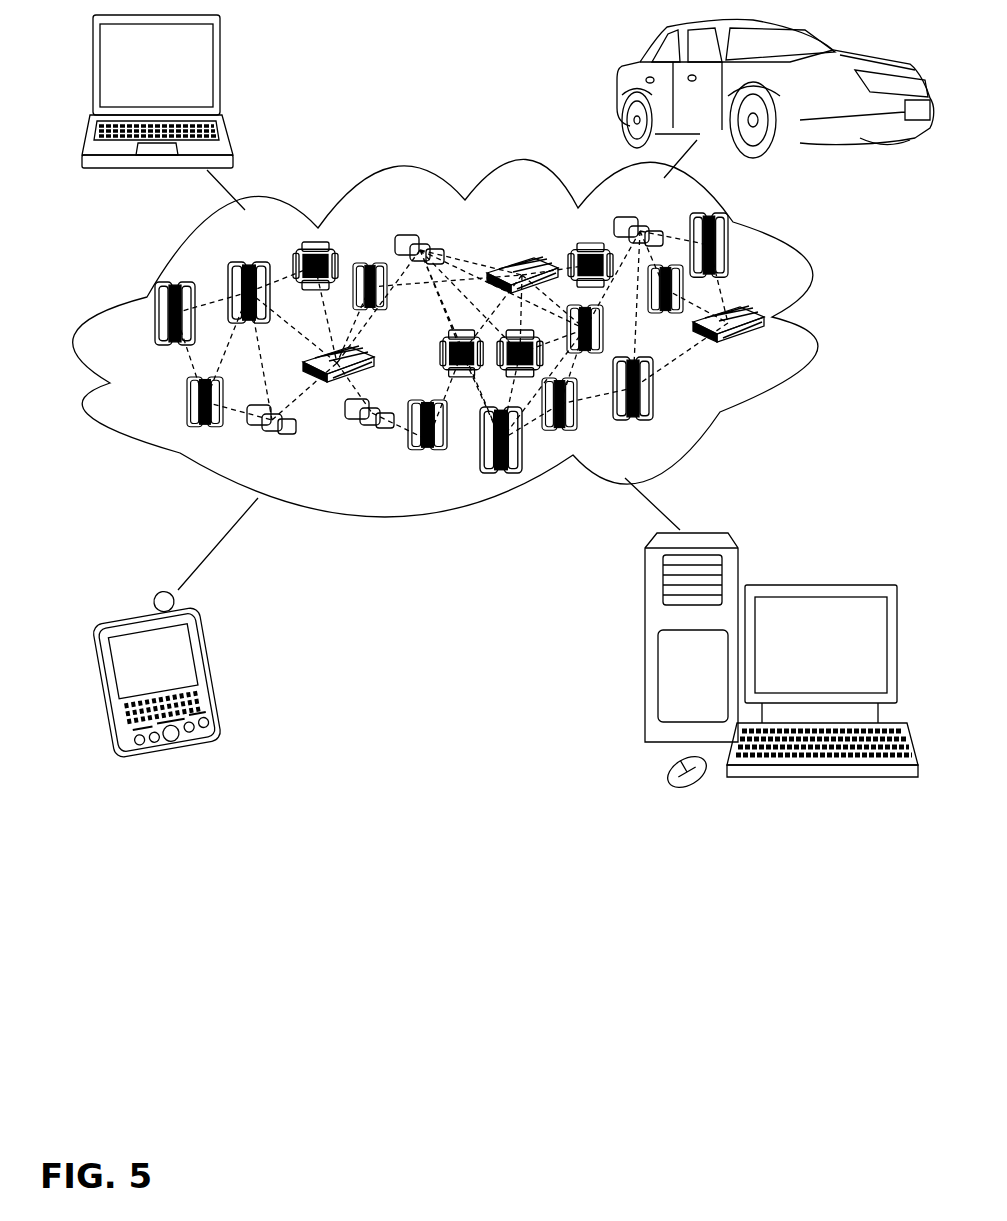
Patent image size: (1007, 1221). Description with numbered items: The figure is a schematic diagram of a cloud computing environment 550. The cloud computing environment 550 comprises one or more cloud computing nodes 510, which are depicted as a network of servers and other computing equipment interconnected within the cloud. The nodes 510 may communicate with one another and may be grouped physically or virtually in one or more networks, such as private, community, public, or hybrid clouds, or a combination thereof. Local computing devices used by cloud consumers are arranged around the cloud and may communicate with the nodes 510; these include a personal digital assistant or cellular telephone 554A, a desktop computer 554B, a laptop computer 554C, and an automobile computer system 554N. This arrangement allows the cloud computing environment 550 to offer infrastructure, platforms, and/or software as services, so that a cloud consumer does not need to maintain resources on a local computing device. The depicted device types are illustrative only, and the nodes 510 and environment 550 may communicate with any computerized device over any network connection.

The cloud computing nodes 510 is at (478, 338).
The cloud computing environment 550 is at (818, 325).
The personal digital assistant (PDA) or cellular telephone 554A is at (214, 676).
The desktop computer 554B is at (826, 567).
The laptop computer 554C is at (221, 76).
The automobile computer system 554N is at (614, 92).